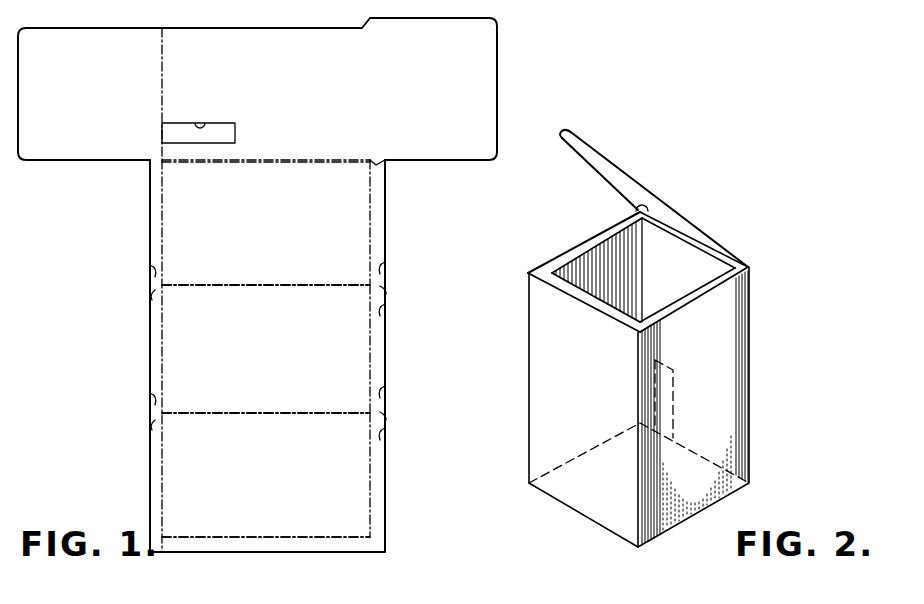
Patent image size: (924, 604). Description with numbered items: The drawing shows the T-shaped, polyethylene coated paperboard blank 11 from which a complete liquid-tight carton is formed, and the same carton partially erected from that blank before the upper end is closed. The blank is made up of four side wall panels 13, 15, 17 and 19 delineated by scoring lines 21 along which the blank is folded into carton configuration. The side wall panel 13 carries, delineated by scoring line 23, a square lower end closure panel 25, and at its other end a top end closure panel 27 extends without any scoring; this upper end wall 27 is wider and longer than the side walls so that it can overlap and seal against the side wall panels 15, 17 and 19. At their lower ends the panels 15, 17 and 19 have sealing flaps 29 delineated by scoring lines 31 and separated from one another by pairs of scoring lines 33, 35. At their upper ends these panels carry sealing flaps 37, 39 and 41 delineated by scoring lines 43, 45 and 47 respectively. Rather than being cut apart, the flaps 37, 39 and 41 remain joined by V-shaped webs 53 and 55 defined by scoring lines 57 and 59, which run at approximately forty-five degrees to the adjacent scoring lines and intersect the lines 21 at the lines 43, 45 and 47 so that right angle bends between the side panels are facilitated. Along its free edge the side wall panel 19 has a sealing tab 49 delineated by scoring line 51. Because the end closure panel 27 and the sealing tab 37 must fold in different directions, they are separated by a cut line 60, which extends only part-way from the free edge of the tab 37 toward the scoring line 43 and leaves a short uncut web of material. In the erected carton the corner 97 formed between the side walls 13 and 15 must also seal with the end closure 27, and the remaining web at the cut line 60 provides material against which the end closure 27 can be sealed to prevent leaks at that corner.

In FIG. 1, the blank 11 is at (392, 497).
In FIG. 2, the blank 11 is at (752, 377).
In FIG. 1, the side wall panel 13 is at (285, 97).
In FIG. 2, the side wall panel 13 is at (660, 276).
In FIG. 1, the side wall panel 15 is at (255, 231).
In FIG. 2, the side wall panel 15 is at (575, 258).
In FIG. 1, the side wall panel 17 is at (254, 356).
In FIG. 2, the side wall panel 17 is at (565, 387).
In FIG. 1, the side wall panel 19 is at (254, 481).
In FIG. 2, the side wall panel 19 is at (692, 387).
In FIG. 1, the scoring lines 21 is at (245, 163).
In FIG. 1, the scoring line 23 is at (164, 97).
In FIG. 1, the lower carton end closure panel 25 is at (73, 97).
In FIG. 2, the lower carton end closure panel 25 is at (603, 499).
In FIG. 1, the top end closure panel 27 is at (416, 97).
In FIG. 2, the top end closure panel 27 is at (668, 214).
In FIG. 1, the sealing flaps 29 is at (149, 216).
In FIG. 1, the scoring lines 31 is at (164, 228).
In FIG. 1, the scoring line 33 is at (150, 272).
In FIG. 1, the scoring line 35 is at (152, 293).
In FIG. 1, the sealing flap 37 is at (386, 224).
In FIG. 2, the sealing flap 37 is at (596, 240).
In FIG. 1, the sealing flap 39 is at (386, 349).
In FIG. 2, the sealing flap 39 is at (582, 298).
In FIG. 1, the sealing flap 41 is at (386, 474).
In FIG. 2, the sealing flap 41 is at (687, 302).
In FIG. 1, the scoring line 43 is at (369, 220).
In FIG. 2, the scoring line 43 is at (552, 262).
In FIG. 1, the scoring line 45 is at (369, 345).
In FIG. 1, the scoring line 47 is at (369, 470).
In FIG. 1, the sealing tab 49 is at (297, 554).
In FIG. 1, the scoring line 51 is at (245, 554).
In FIG. 1, the web 53 is at (201, 124).
In FIG. 2, the web 53 is at (674, 410).
In FIG. 1, the web 55 is at (386, 412).
In FIG. 1, the scoring line 57 is at (385, 265).
In FIG. 1, the scoring line 59 is at (385, 390).
In FIG. 1, the cut line 60 is at (376, 160).
In FIG. 2, the cut line 60 is at (646, 214).
In FIG. 2, the corner 97 is at (627, 208).